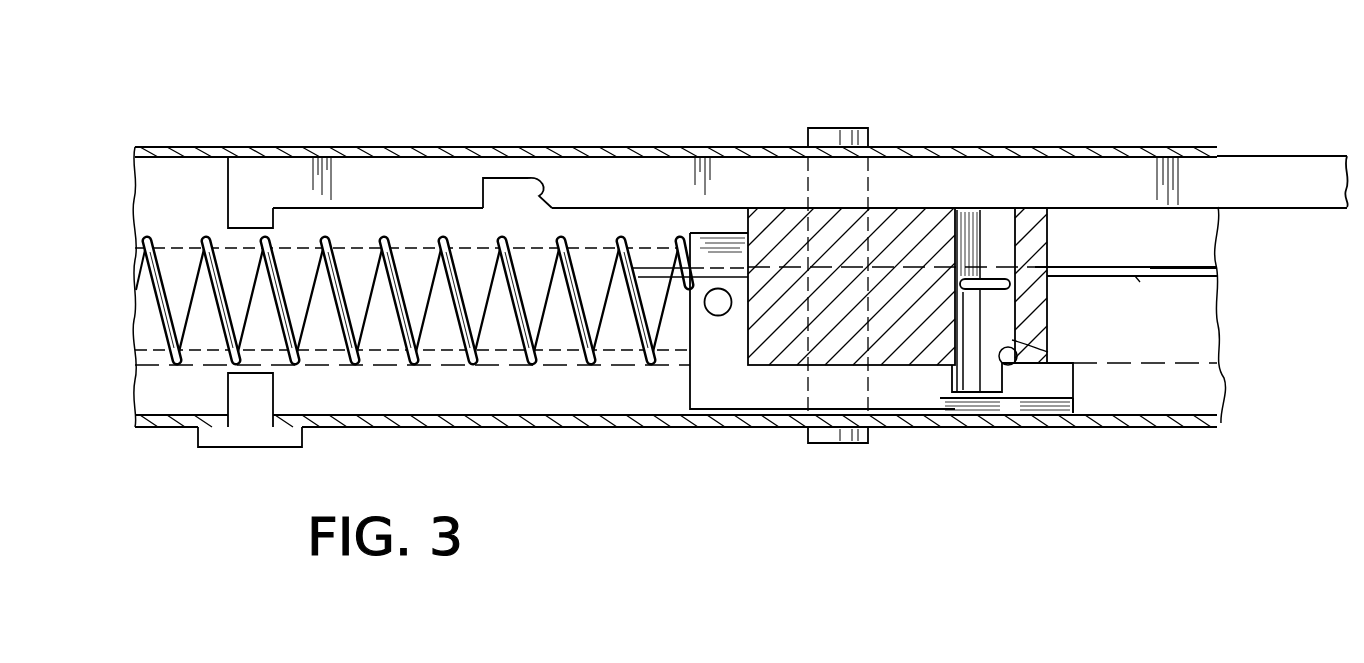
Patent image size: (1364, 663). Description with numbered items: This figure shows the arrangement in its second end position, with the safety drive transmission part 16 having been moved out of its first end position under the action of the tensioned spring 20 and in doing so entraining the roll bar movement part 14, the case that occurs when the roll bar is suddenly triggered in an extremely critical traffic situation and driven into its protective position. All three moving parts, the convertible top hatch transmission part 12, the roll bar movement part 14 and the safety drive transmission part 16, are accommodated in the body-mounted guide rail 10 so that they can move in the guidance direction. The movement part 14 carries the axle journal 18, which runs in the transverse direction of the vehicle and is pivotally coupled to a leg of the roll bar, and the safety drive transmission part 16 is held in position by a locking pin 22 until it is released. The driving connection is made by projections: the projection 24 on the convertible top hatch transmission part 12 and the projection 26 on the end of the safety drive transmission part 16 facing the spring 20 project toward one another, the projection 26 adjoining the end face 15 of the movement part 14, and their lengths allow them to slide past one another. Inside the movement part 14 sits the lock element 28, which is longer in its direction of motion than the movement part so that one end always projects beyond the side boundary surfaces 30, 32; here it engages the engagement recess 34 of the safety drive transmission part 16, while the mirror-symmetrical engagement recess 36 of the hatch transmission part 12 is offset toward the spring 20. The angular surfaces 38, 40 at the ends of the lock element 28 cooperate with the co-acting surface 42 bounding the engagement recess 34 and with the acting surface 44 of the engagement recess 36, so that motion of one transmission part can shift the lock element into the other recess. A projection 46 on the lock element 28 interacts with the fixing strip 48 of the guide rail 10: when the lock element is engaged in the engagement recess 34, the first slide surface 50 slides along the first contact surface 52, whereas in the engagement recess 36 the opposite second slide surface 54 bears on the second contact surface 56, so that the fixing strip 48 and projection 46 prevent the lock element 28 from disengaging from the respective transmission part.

The guide rail 10 is at (190, 185).
The convertible top hatch transmission part 12 is at (1283, 178).
The roll bar movement part 14 is at (888, 338).
The end face 15 is at (745, 222).
The safety drive transmission part 16 is at (1060, 387).
The axle journal 18 is at (838, 443).
The spring 20 is at (165, 323).
The locking pin 22 is at (720, 309).
The projection 24 is at (245, 218).
The projection 26 is at (703, 250).
The lock element 28 is at (982, 243).
The side boundary surface 30 is at (775, 365).
The side boundary surface 32 is at (781, 207).
The engagement recess 34 is at (1006, 385).
The engagement recess 36 is at (493, 195).
The angular surface 38 is at (1016, 362).
The angular surface 40 is at (1010, 213).
The co-acting surface 42 is at (1050, 367).
The acting surface 44 is at (530, 185).
The projection 46 is at (1045, 273).
The fixing strip 48 is at (1162, 270).
The first slide surface 50 is at (980, 272).
The first contact surface 52 is at (1137, 280).
The second slide surface 54 is at (1013, 343).
The second contact surface 56 is at (1110, 265).